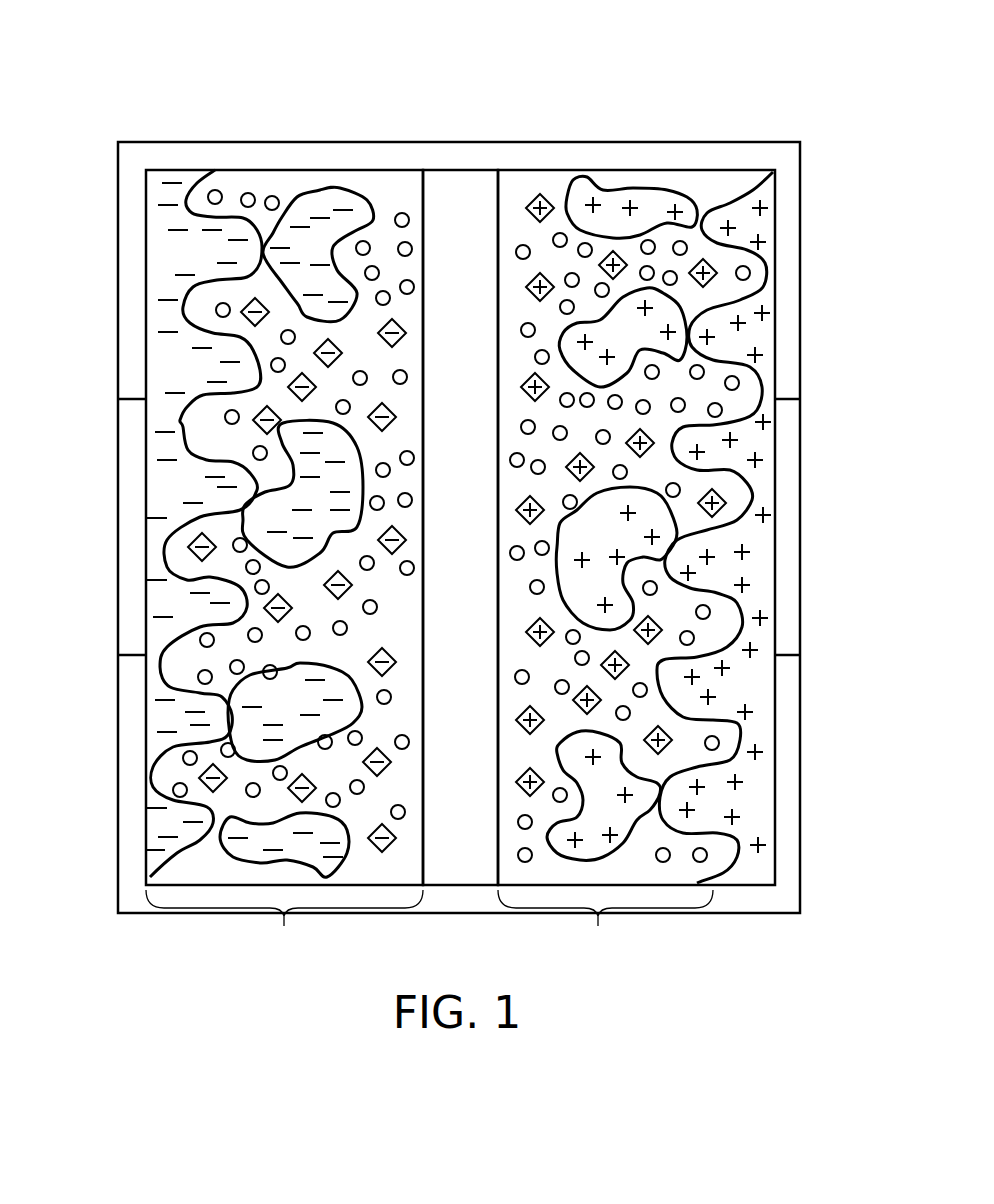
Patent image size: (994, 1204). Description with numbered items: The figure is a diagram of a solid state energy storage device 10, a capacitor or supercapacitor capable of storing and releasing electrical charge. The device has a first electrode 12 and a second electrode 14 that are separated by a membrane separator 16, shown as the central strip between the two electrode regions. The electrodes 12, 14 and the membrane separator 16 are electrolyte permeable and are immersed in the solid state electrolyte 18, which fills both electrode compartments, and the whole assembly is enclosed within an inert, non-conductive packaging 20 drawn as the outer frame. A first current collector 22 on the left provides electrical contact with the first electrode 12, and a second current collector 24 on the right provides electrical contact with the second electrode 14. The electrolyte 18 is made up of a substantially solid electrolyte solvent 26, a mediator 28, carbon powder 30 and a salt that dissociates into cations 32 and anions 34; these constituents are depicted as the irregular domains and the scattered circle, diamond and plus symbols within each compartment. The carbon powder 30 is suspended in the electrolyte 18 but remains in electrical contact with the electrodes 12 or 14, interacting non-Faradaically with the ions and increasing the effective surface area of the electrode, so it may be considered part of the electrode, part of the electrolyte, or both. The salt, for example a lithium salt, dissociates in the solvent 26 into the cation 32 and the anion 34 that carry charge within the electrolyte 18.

The solid state energy storage device 10 is at (232, 94).
The first electrode 12 is at (163, 245).
The second electrode 14 is at (766, 231).
The membrane separator 16 is at (475, 190).
The solid state electrolyte 18 is at (429, 927).
The packaging 20 is at (131, 898).
The first current collector 22 is at (118, 503).
The second current collector 24 is at (802, 503).
The electrolyte solvent 26 is at (518, 302).
The mediator 28 is at (520, 503).
The carbon powder 30 is at (334, 192).
The cation 32 is at (411, 245).
The anion 34 is at (535, 357).